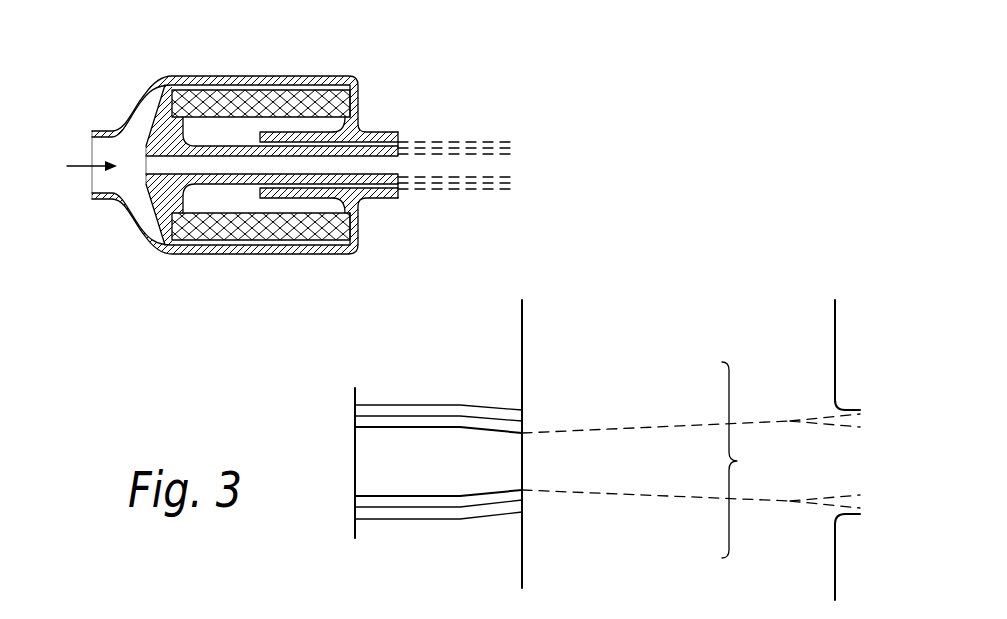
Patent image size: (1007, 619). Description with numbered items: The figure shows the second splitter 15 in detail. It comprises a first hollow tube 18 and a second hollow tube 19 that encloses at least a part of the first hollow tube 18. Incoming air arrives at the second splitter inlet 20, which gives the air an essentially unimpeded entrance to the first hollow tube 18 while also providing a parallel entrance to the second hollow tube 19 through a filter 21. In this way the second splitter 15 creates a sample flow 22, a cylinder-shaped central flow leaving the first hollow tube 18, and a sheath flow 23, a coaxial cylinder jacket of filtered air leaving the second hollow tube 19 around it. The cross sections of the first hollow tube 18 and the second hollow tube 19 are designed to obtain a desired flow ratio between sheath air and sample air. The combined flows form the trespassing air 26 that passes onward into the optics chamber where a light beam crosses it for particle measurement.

The second splitter 15 is at (108, 68).
The first hollow tube 18 is at (388, 162).
The second hollow tube 19 is at (398, 141).
The second splitter inlet 20 is at (77, 167).
The filter 21 is at (263, 100).
The sample flow 22 is at (503, 165).
The sheath flow 23 is at (512, 142).
The trespassing air 26 is at (737, 461).